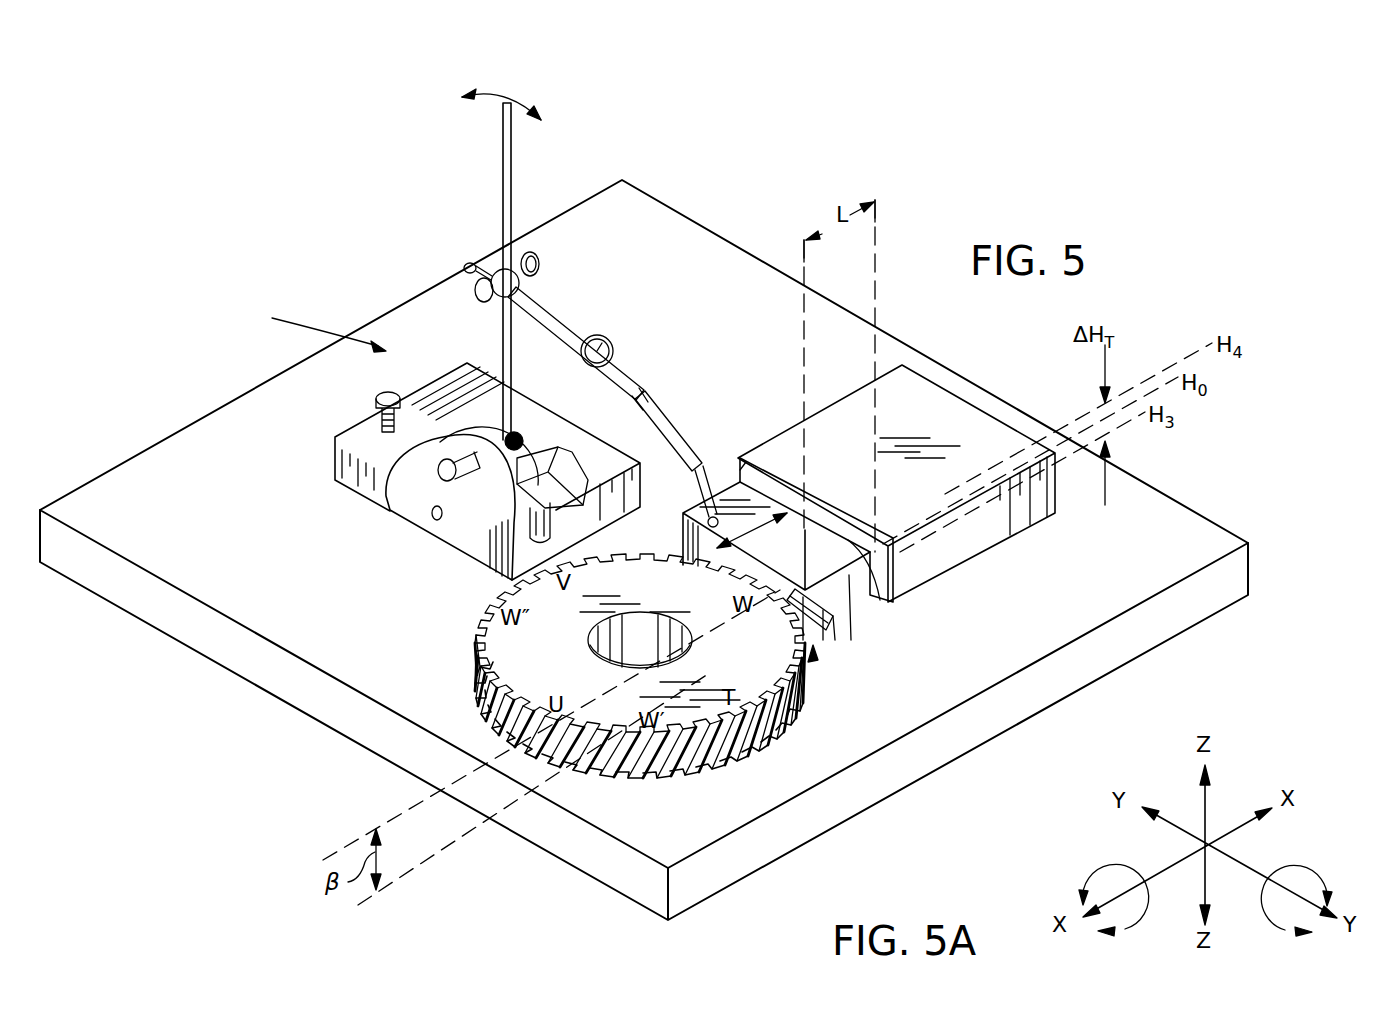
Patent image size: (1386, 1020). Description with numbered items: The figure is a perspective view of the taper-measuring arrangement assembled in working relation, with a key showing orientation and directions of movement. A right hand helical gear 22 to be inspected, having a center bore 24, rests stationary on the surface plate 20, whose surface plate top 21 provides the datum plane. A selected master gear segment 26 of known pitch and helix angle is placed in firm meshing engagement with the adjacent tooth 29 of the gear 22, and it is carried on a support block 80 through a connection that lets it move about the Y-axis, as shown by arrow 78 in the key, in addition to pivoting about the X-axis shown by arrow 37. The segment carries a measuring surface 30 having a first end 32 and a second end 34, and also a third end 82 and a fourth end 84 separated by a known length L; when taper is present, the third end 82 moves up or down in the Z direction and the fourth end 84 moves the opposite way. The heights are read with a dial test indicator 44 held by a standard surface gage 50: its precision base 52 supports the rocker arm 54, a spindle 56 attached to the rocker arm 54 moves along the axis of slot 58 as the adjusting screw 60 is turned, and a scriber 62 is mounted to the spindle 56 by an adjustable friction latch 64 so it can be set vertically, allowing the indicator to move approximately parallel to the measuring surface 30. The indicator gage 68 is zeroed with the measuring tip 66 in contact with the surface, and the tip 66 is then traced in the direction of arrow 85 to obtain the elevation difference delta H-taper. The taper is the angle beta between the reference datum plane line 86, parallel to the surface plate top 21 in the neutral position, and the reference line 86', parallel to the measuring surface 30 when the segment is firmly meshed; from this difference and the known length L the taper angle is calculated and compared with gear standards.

In FIG. 5, the surface plate 20 is at (165, 612).
In FIG. 5, the surface plate top 21 is at (160, 466).
In FIG. 5, the helical gear 22 is at (492, 665).
In FIG. 5, the center bore 24 is at (622, 676).
In FIG. 5, the selected master gear segment 26 is at (812, 650).
In FIG. 5, the tooth 29 is at (740, 597).
In FIG. 5, the measuring surface 30 is at (808, 546).
In FIG. 5, the first end 32 is at (833, 568).
In FIG. 5, the second end 34 is at (748, 474).
In FIG. 5A, the arrow 37 is at (1100, 868).
In FIG. 5, the dial test indicator 44 is at (553, 317).
In FIG. 5, the surface gage 50 is at (311, 330).
In FIG. 5, the precision base 52 is at (420, 512).
In FIG. 5, the rocker arm 54 is at (492, 540).
In FIG. 5, the spindle 56 is at (502, 142).
In FIG. 5, the slot 58 is at (407, 486).
In FIG. 5, the adjusting screw 60 is at (375, 402).
In FIG. 5, the scriber 62 is at (462, 270).
In FIG. 5, the adjustable friction latch 64 is at (547, 252).
In FIG. 5, the measuring tip 66 is at (706, 490).
In FIG. 5, the indicator gage 68 is at (613, 338).
In FIG. 5A, the arrow 78 is at (1305, 870).
In FIG. 5, the support block 80 is at (975, 545).
In FIG. 5, the third end 82 is at (872, 560).
In FIG. 5, the fourth end 84 is at (814, 620).
In FIG. 5, the arrow 85 is at (752, 520).
In FIG. 5, the reference datum plane line 86 is at (527, 725).
In FIG. 5, the reference line 86' is at (533, 826).